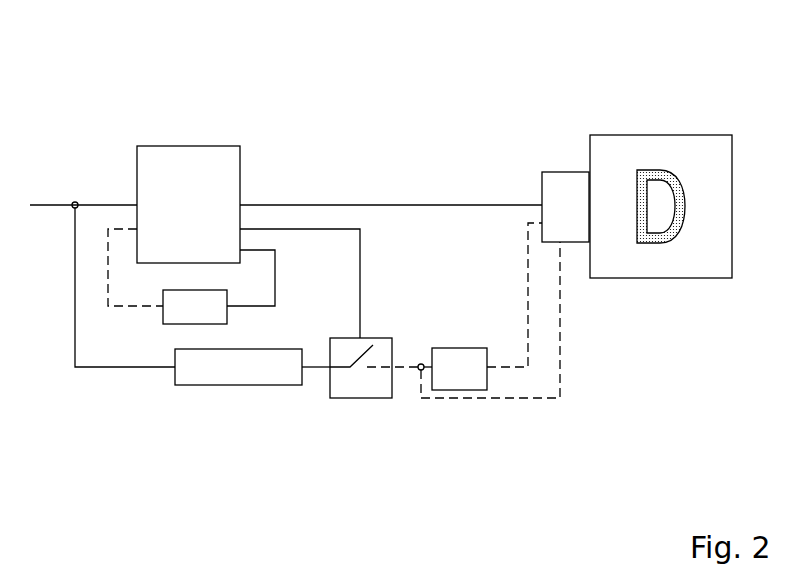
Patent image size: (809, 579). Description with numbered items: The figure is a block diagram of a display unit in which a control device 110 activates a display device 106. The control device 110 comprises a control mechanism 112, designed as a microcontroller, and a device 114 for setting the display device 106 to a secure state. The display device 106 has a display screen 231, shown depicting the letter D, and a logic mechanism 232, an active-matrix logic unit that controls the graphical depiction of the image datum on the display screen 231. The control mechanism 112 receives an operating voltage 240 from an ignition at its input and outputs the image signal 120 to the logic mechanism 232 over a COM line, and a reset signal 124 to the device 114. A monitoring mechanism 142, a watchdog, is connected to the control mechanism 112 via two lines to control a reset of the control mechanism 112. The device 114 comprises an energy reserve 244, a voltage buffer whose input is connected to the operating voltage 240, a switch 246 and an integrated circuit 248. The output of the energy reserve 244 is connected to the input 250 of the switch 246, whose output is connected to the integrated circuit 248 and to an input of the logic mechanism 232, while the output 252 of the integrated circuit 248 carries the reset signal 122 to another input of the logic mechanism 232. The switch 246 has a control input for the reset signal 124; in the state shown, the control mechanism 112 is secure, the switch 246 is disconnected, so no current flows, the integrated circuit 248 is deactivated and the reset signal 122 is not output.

The operating voltage 240 is at (52, 203).
The control mechanism 112 is at (190, 145).
The input of the switch 250 is at (362, 340).
The control device 110 is at (391, 108).
The image signal 120 is at (453, 205).
The logic mechanism 232 is at (568, 172).
The display device 106 is at (618, 110).
The display screen 231 is at (707, 135).
The monitoring mechanism 142 is at (177, 325).
The device for setting the display device to a secure state 114 is at (240, 432).
The energy reserve 244 is at (280, 386).
The reset signal 124 is at (360, 280).
The switch 246 is at (377, 398).
The integrated circuit 248 is at (460, 390).
The output of the integrated circuit 252 is at (490, 372).
The reset signal 122 is at (560, 330).